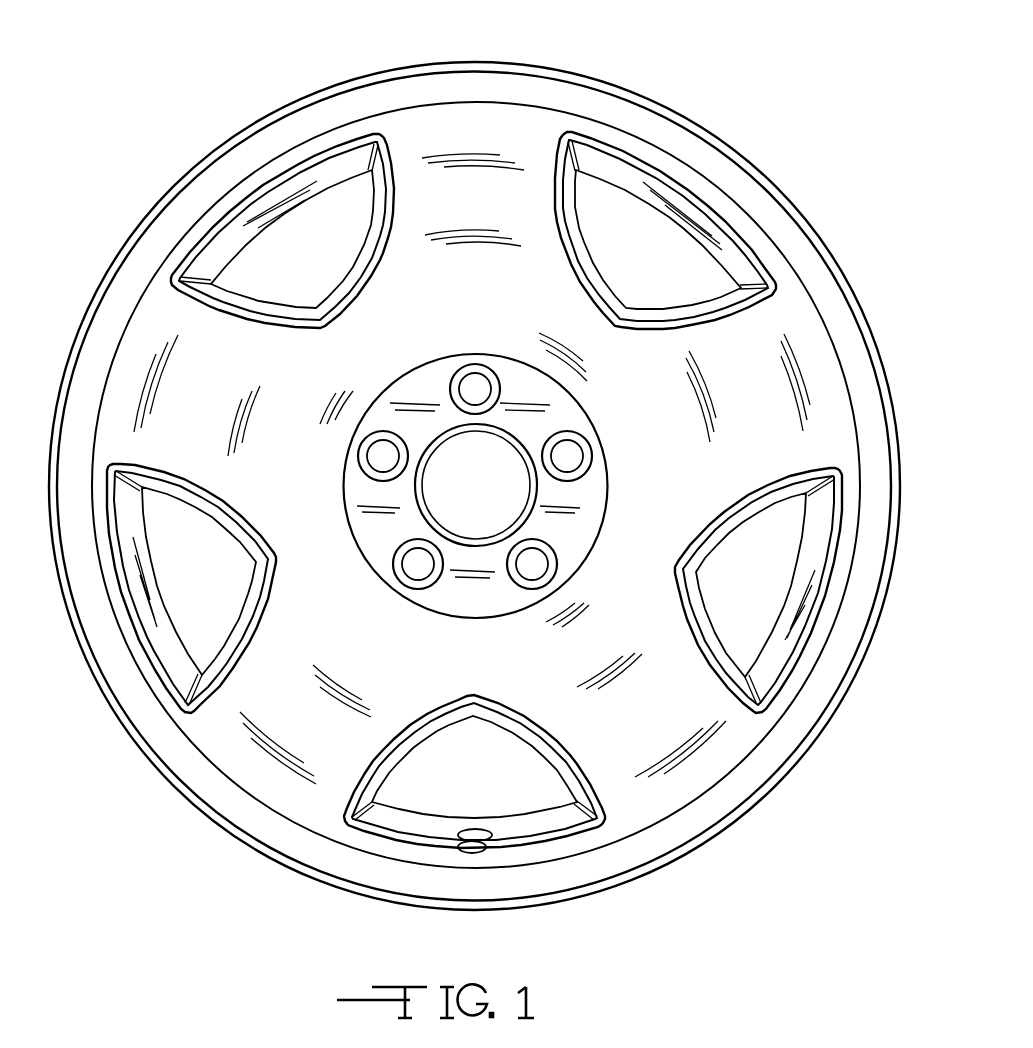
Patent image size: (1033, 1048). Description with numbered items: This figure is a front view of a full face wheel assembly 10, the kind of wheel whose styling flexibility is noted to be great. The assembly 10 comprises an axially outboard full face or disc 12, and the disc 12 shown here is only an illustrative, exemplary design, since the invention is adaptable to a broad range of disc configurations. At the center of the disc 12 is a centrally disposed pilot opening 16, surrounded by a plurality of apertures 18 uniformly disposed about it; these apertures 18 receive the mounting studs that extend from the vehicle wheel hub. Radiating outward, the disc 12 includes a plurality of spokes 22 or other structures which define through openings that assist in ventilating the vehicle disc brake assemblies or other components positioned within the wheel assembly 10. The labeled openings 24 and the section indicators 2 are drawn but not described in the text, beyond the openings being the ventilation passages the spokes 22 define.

The full face wheel assembly 10 is at (474, 459).
The disc 12 is at (718, 132).
The pilot opening 16 is at (423, 498).
The apertures 18 is at (498, 388).
The spokes 22 is at (778, 425).
The windows 24 is at (665, 279).
The section line 2 is at (475, 48).